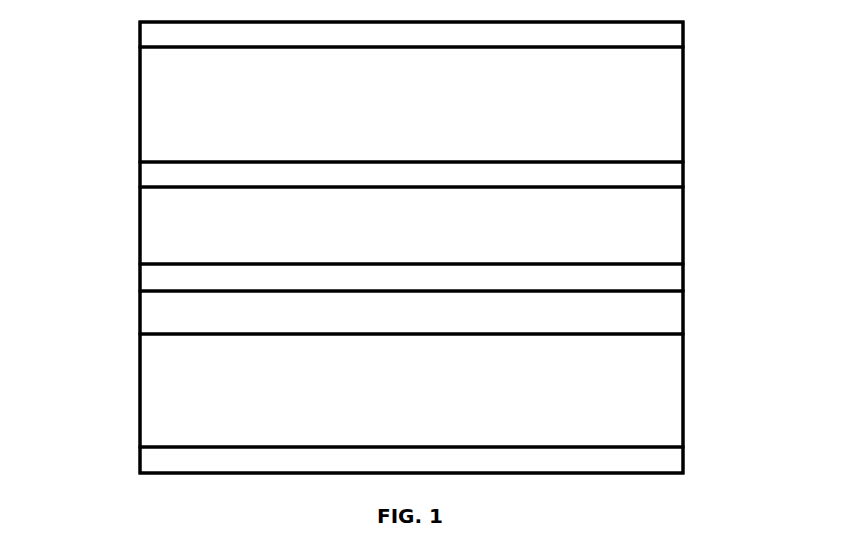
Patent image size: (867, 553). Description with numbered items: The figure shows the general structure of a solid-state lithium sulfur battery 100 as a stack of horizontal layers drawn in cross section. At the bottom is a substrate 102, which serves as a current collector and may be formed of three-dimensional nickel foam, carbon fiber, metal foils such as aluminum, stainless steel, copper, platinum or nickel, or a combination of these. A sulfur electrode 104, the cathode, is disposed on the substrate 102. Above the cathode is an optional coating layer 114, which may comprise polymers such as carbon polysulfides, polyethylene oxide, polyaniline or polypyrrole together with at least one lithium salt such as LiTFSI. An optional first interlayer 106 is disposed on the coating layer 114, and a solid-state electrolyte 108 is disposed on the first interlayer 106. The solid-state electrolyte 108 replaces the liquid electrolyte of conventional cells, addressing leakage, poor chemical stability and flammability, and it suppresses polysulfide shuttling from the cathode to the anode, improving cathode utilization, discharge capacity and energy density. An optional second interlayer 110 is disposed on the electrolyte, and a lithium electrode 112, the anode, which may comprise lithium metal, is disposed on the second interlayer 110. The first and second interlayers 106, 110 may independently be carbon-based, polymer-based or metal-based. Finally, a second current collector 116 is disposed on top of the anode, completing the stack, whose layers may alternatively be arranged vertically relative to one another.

The battery 100 is at (108, 114).
The substrate 102 is at (683, 458).
The sulfur electrode 104 is at (683, 395).
The first interlayer 106 is at (683, 276).
The solid-state electrolyte 108 is at (683, 233).
The second interlayer 110 is at (683, 172).
The lithium electrode 112 is at (683, 113).
The coating layer 114 is at (683, 315).
The second current collector 116 is at (683, 37).